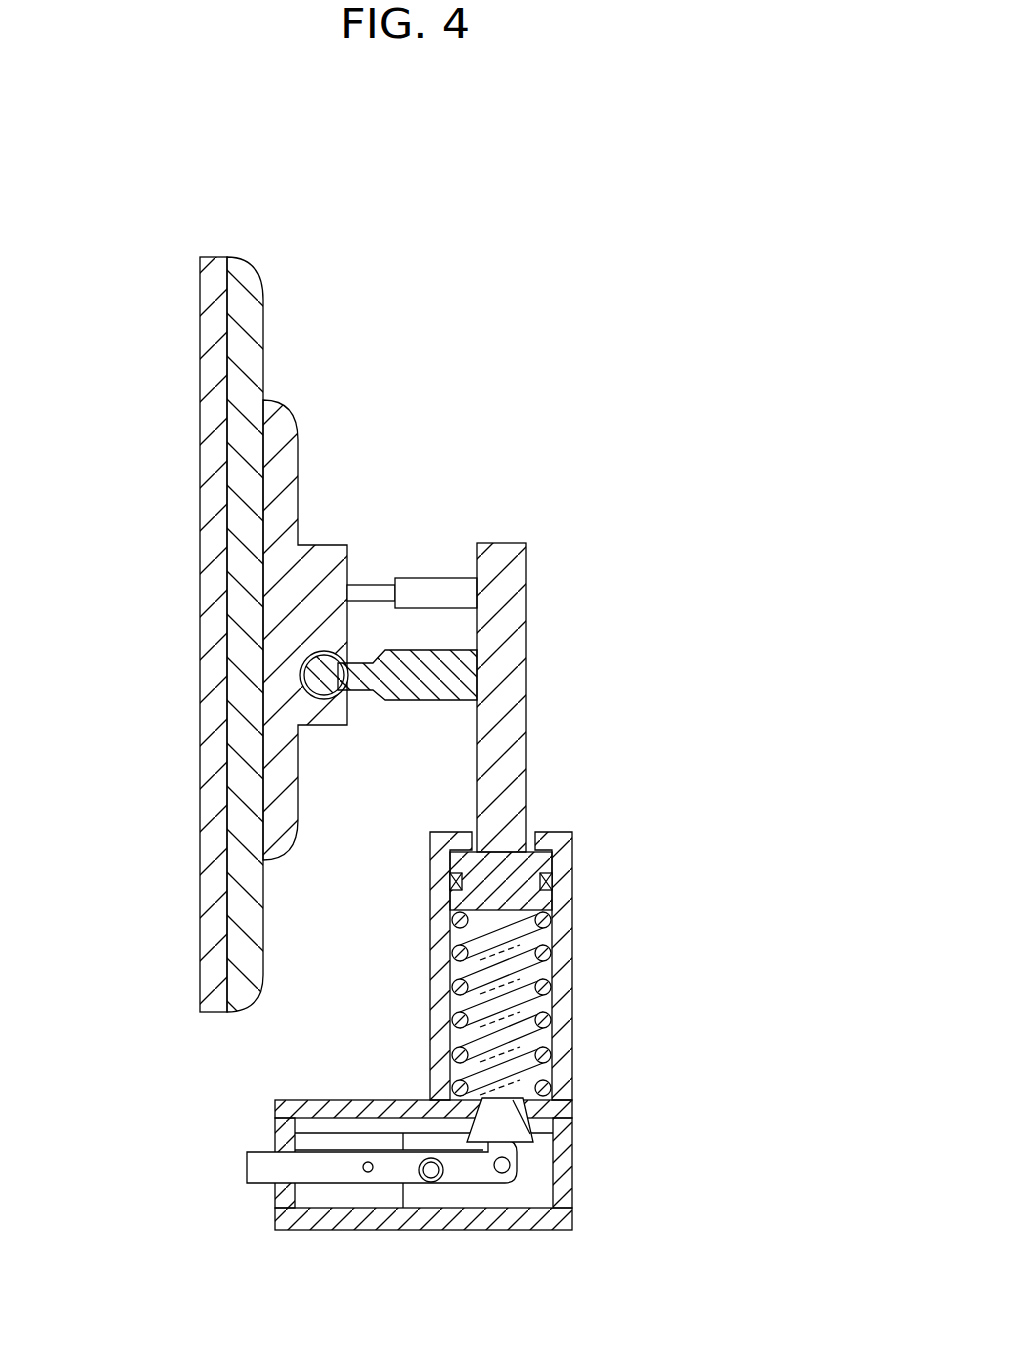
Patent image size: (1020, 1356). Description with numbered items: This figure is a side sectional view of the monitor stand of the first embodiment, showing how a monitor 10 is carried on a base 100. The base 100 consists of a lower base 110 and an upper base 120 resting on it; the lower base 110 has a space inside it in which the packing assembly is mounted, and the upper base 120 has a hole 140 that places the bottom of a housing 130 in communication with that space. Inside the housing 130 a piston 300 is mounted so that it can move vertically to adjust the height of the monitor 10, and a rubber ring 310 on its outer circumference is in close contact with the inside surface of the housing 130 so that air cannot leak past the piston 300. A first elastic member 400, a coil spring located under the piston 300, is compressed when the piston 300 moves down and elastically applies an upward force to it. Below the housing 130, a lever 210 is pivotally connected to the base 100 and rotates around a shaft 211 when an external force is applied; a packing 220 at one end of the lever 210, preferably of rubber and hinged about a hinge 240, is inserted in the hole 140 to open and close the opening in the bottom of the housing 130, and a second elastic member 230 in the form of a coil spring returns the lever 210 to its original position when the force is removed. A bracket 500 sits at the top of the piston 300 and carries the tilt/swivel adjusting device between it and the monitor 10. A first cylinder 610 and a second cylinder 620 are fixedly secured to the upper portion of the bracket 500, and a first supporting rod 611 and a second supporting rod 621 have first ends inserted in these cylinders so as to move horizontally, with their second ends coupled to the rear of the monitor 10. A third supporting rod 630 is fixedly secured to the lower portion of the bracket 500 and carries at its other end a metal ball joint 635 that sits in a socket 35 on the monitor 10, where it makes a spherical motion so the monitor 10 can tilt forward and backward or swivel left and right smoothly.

The monitor 10 is at (212, 352).
The socket 35 is at (310, 668).
The base 100 is at (518, 1160).
The lower base 110 is at (572, 1170).
The upper base 120 is at (565, 1118).
The housing 130 is at (572, 940).
The hole 140 is at (546, 1083).
The lever 210 is at (258, 1165).
The shaft 211 is at (368, 1172).
The packing 220 is at (493, 1115).
The second elastic member 230 is at (442, 1182).
The hinge 240 is at (508, 1172).
The piston 300 is at (552, 858).
The rubber ring 310 is at (552, 885).
The first elastic member 400 is at (567, 1004).
The bracket 500 is at (512, 582).
The first cylinder 610 is at (436, 550).
The second cylinder 620 is at (435, 585).
The first supporting rod 611 is at (365, 523).
The second supporting rod 621 is at (372, 586).
The third supporting rod 630 is at (448, 656).
The ball joint 635 is at (328, 697).